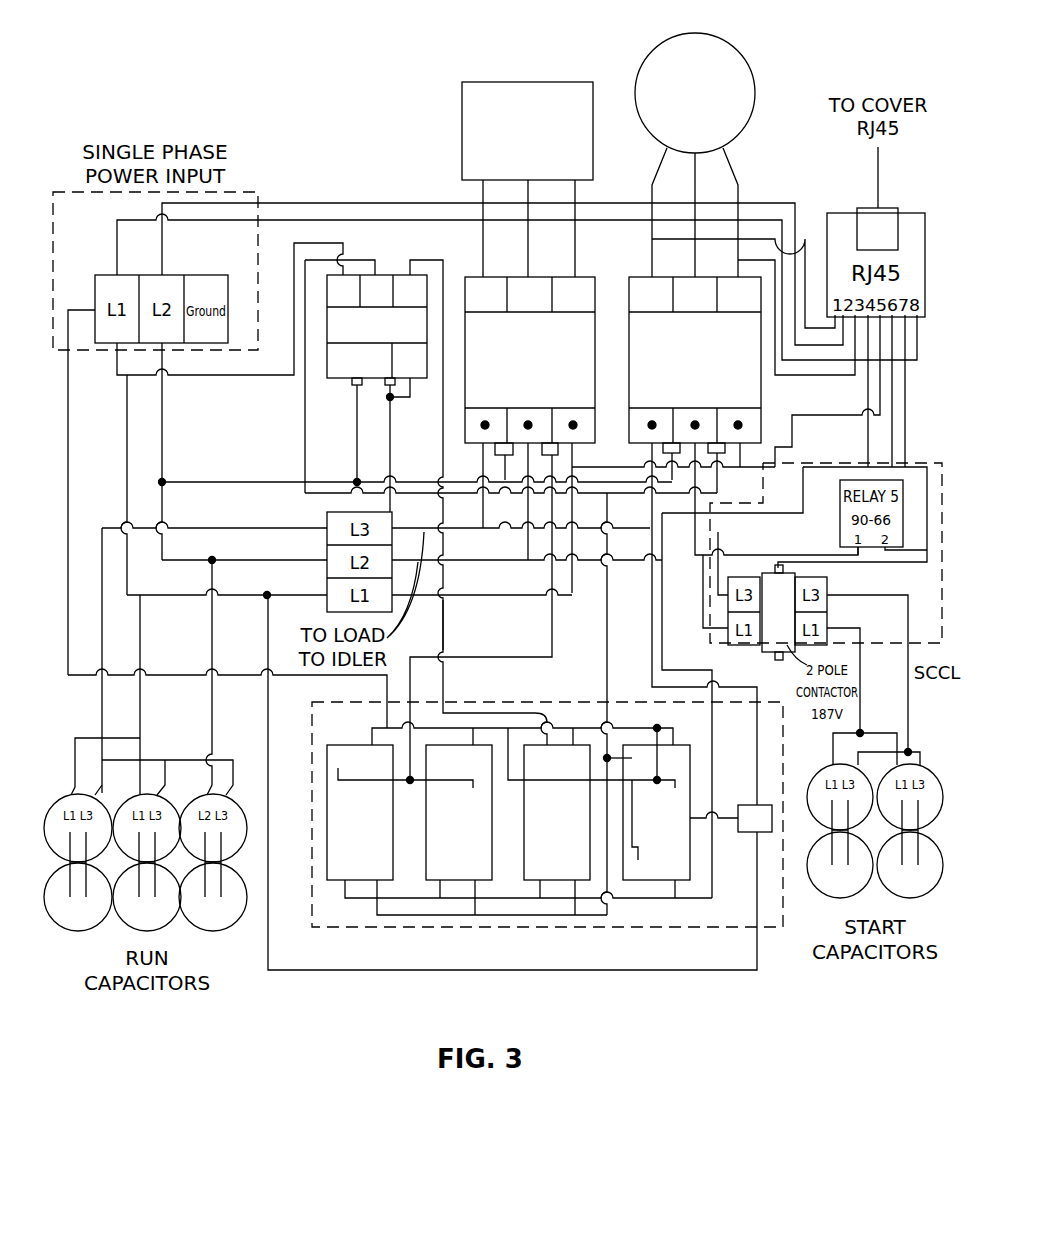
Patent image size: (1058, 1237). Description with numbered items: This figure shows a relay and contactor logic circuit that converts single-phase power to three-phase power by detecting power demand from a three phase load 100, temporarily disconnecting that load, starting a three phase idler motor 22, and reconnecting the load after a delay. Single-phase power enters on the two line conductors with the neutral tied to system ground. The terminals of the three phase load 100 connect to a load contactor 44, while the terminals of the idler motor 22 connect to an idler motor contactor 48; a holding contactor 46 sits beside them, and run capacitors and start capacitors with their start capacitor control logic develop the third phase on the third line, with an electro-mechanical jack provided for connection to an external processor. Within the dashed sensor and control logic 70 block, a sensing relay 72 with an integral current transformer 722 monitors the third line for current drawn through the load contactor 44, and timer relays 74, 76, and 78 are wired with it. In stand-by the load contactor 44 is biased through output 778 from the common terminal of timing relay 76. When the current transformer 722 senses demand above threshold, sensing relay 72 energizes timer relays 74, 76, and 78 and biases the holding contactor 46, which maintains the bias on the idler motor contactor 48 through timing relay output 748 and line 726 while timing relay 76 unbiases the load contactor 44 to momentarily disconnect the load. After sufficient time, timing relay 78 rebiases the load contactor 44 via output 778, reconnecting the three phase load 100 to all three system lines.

The three phase idler motor 22 is at (700, 33).
The three phase load 100 is at (548, 82).
The holding contactor 46 is at (352, 194).
The load contactor 44 is at (530, 435).
The idler motor contactor 48 is at (695, 385).
The control logic sub-circuit output 778 is at (552, 622).
The timing relay output 748 is at (443, 625).
The control logic line 726 is at (607, 672).
The timing relay 78 is at (360, 812).
The timing relay 76 is at (459, 812).
The timer relay 74 is at (557, 812).
The sensing relay 72 is at (656, 812).
The current transformer 722 is at (752, 832).
The sensor and control logic 70 is at (645, 928).